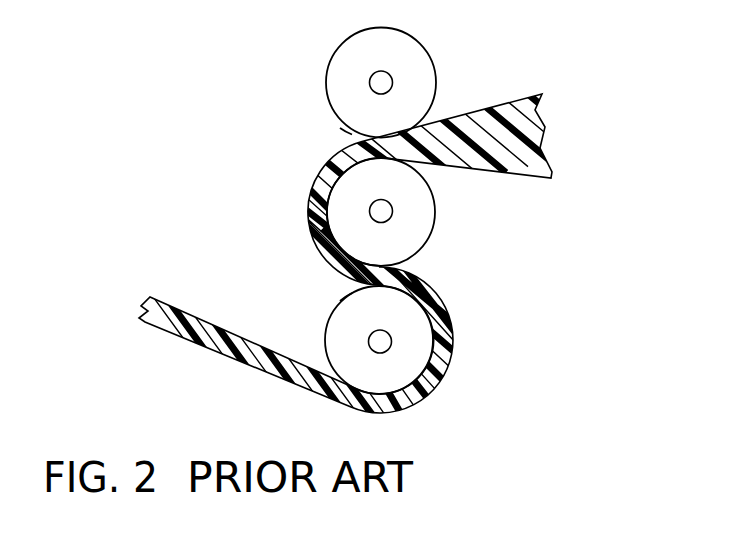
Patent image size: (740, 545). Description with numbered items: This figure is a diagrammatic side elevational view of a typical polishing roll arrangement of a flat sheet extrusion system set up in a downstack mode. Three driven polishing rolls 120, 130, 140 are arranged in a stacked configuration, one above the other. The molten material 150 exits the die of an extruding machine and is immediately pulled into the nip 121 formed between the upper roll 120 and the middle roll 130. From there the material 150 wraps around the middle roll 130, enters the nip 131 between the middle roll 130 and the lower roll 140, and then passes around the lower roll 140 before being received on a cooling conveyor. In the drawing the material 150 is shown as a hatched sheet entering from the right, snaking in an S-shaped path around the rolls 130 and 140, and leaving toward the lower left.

The polishing roll 120 is at (400, 122).
The nip 121 is at (340, 128).
The polishing roll 130 is at (400, 251).
The nip 131 is at (334, 287).
The polishing roll 140 is at (400, 322).
The molten material 150 is at (490, 108).